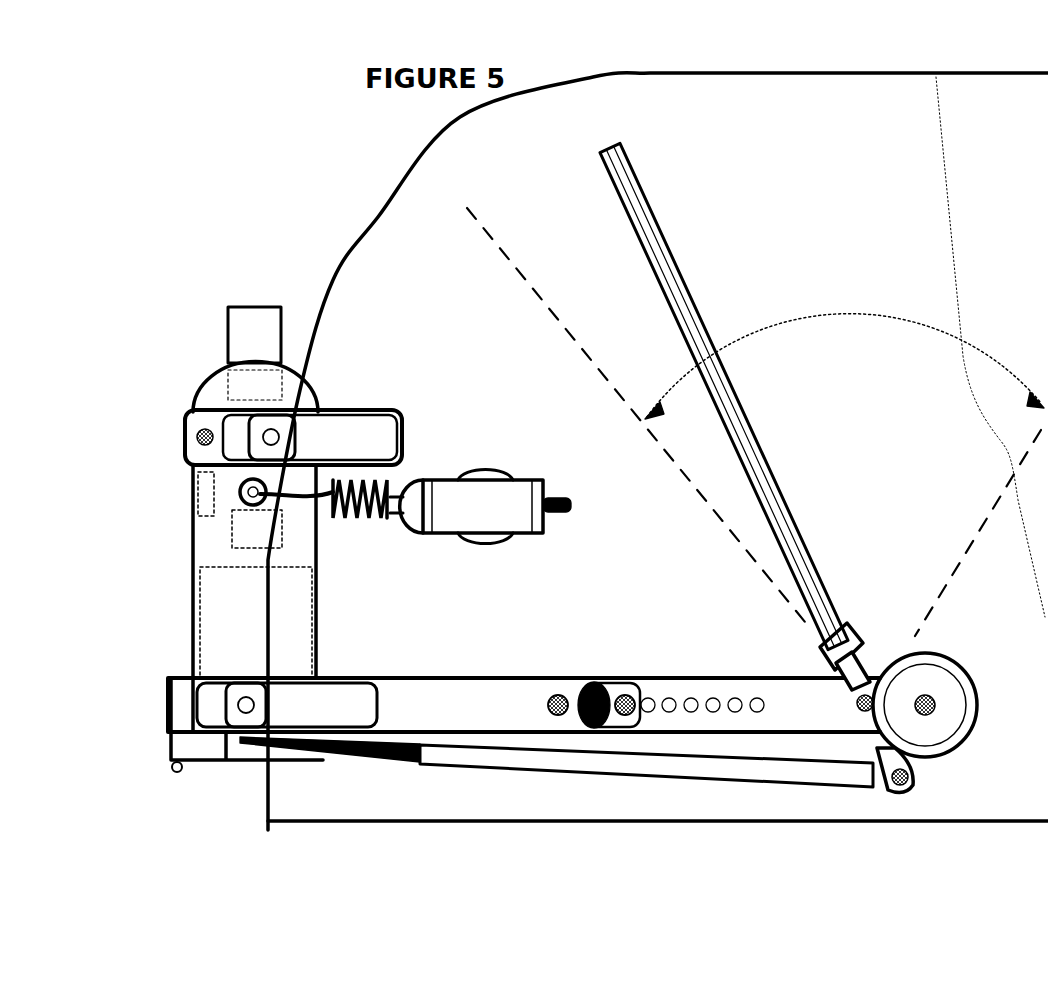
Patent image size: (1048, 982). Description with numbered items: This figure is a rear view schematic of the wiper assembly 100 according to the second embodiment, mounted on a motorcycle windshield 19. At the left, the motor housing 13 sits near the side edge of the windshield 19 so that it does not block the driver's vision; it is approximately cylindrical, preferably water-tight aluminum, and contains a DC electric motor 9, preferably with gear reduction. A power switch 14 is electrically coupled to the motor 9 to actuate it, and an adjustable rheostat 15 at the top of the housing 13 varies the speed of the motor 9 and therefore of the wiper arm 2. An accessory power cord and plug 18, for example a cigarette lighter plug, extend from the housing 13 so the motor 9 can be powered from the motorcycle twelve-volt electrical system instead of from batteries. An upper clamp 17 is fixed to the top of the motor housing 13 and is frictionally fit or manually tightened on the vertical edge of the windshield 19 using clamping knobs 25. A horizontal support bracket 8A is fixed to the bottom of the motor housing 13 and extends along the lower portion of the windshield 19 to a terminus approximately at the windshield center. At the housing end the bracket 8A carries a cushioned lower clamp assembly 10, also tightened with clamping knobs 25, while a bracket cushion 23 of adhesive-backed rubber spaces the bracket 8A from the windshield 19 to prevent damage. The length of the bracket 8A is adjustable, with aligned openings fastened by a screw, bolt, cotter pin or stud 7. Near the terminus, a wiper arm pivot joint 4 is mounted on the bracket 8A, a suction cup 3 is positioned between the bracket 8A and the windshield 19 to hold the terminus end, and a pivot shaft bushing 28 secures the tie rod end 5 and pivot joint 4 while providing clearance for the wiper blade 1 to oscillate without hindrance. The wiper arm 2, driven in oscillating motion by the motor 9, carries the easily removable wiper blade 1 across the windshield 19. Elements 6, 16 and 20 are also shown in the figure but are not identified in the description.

The wiper assembly 100 is at (245, 205).
The wiper blade 1 is at (670, 255).
The wiper arm 2 is at (862, 660).
The suction cup 3 is at (925, 705).
The wiper arm pivot joint 4 is at (905, 770).
The tie rod end 5 is at (880, 782).
The lower arm 6 is at (475, 770).
The stud 7 is at (557, 696).
The horizontal support bracket 8A is at (703, 677).
The DC electric motor 9 is at (220, 630).
The lower clamp assembly 10 is at (345, 703).
The motor housing 13 is at (322, 610).
The power switch 14 is at (188, 492).
The adjustable rheostat 15 is at (242, 308).
The dome cap 16 is at (238, 388).
The upper clamp 17 is at (369, 435).
The accessory power cord and plug 18 is at (441, 493).
The windshield 19 is at (340, 283).
The lower slot 20 is at (245, 528).
The bracket cushion 23 is at (608, 697).
The clamping knobs 25 is at (249, 425).
The pivot shaft bushing 28 is at (226, 712).